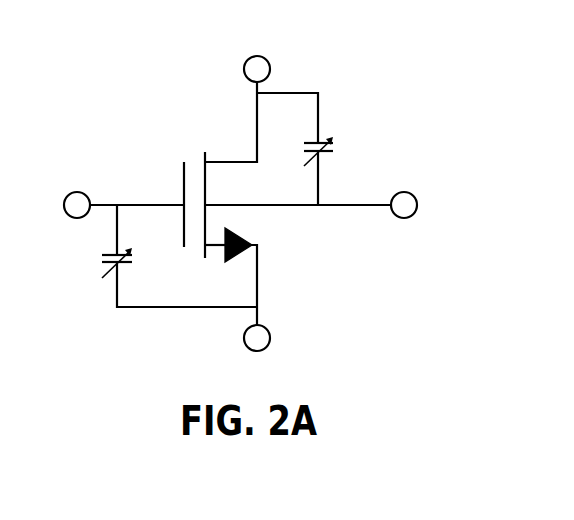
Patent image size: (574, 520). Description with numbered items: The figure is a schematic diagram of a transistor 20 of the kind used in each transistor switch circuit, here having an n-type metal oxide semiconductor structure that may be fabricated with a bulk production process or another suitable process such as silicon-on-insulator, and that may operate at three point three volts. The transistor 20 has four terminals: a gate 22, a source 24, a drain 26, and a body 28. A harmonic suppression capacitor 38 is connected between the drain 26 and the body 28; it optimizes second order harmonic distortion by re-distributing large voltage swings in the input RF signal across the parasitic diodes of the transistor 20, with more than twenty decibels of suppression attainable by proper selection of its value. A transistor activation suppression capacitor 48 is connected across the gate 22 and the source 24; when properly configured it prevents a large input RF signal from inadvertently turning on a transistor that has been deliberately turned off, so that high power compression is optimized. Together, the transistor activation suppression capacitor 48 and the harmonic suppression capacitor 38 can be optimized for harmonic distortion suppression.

The transistor 20 is at (152, 139).
The gate 22 is at (77, 218).
The source 24 is at (270, 338).
The drain 26 is at (244, 72).
The body 28 is at (417, 205).
The harmonic suppression capacitor Cap_HD2 38 is at (325, 154).
The transistor activation suppression capacitor Cgs_1dB 48 is at (110, 262).